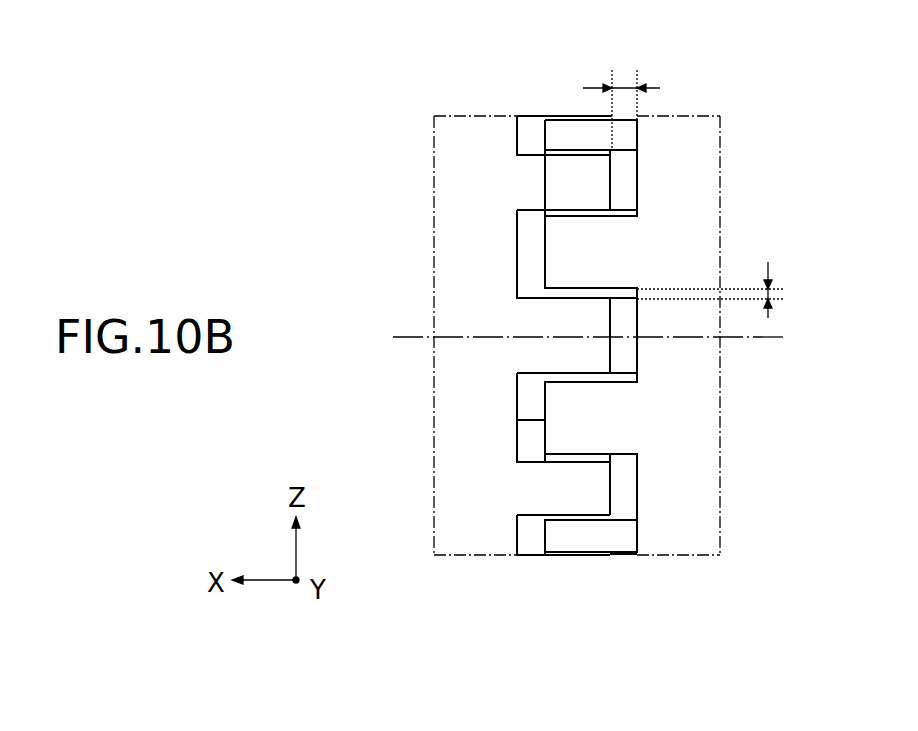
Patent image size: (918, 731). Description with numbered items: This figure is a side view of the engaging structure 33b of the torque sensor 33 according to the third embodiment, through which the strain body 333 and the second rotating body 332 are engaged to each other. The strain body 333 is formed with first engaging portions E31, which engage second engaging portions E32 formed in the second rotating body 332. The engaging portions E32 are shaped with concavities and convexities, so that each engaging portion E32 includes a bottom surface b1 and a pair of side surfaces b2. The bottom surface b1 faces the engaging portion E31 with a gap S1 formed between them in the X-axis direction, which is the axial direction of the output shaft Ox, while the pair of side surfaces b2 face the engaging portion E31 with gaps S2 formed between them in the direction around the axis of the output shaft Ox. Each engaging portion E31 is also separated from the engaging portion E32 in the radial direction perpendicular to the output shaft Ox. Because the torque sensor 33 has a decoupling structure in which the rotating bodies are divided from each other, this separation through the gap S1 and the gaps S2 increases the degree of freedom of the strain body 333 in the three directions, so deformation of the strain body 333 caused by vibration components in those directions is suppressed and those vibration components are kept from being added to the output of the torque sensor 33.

The torque sensor 33 is at (505, 346).
The second rotating body 332 is at (479, 116).
The strain body 333 is at (703, 116).
The engaging structure 33b is at (505, 645).
The engaging portion E31 is at (568, 427).
The engaging portion E32 is at (560, 497).
The bottom surface b1 is at (520, 412).
The side surface b2 is at (530, 441).
The gap S1 is at (621, 90).
The gap S2 is at (730, 287).
The output shaft Ox is at (403, 335).